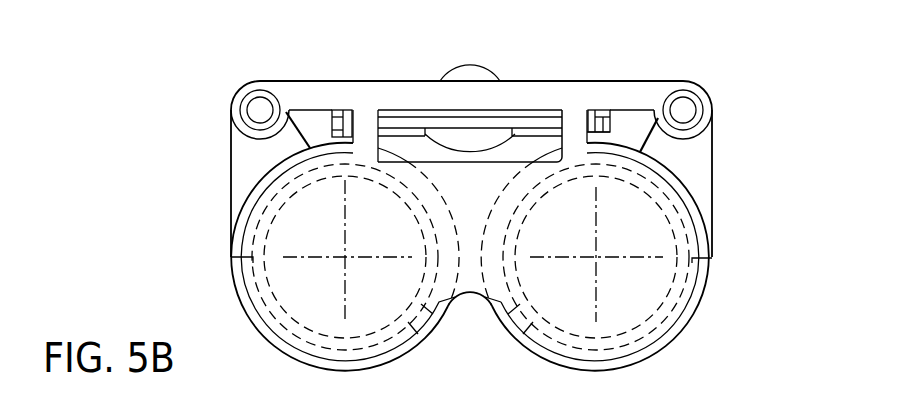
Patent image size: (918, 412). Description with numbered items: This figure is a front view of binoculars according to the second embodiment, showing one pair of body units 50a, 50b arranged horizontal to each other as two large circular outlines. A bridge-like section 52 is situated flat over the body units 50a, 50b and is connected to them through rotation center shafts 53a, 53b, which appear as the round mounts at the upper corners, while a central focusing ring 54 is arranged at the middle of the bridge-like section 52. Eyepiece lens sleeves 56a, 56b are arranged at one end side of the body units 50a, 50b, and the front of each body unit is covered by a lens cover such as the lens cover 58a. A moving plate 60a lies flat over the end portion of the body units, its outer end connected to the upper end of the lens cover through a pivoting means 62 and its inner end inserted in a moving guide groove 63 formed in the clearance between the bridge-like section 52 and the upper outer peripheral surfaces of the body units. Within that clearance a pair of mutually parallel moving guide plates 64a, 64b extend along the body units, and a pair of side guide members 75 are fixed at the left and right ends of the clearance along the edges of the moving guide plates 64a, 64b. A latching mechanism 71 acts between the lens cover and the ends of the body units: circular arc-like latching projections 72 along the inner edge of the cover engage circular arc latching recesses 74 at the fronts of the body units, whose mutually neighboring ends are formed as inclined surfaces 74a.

The bridge-like section 52 is at (638, 87).
The rotation center shaft 53a is at (260, 108).
The rotation center shaft 53b is at (683, 107).
The central focusing ring 54 is at (498, 79).
The moving plate 60a is at (407, 120).
The pivoting means 62 is at (363, 127).
The moving guide groove 63 is at (594, 112).
The moving guide plate 64a is at (472, 112).
The moving guide plate 64b is at (425, 137).
The side guide member 75 is at (330, 128).
The body unit 50a is at (243, 209).
The body unit 50b is at (690, 183).
The eyepiece lens sleeve 56a is at (236, 155).
The eyepiece lens sleeve 56b is at (712, 242).
The lens cover 58a is at (470, 270).
The latching mechanism 71 is at (252, 335).
The latching projection 72 is at (252, 282).
The latching recess 74 is at (240, 280).
The inclined surface 74a is at (425, 340).